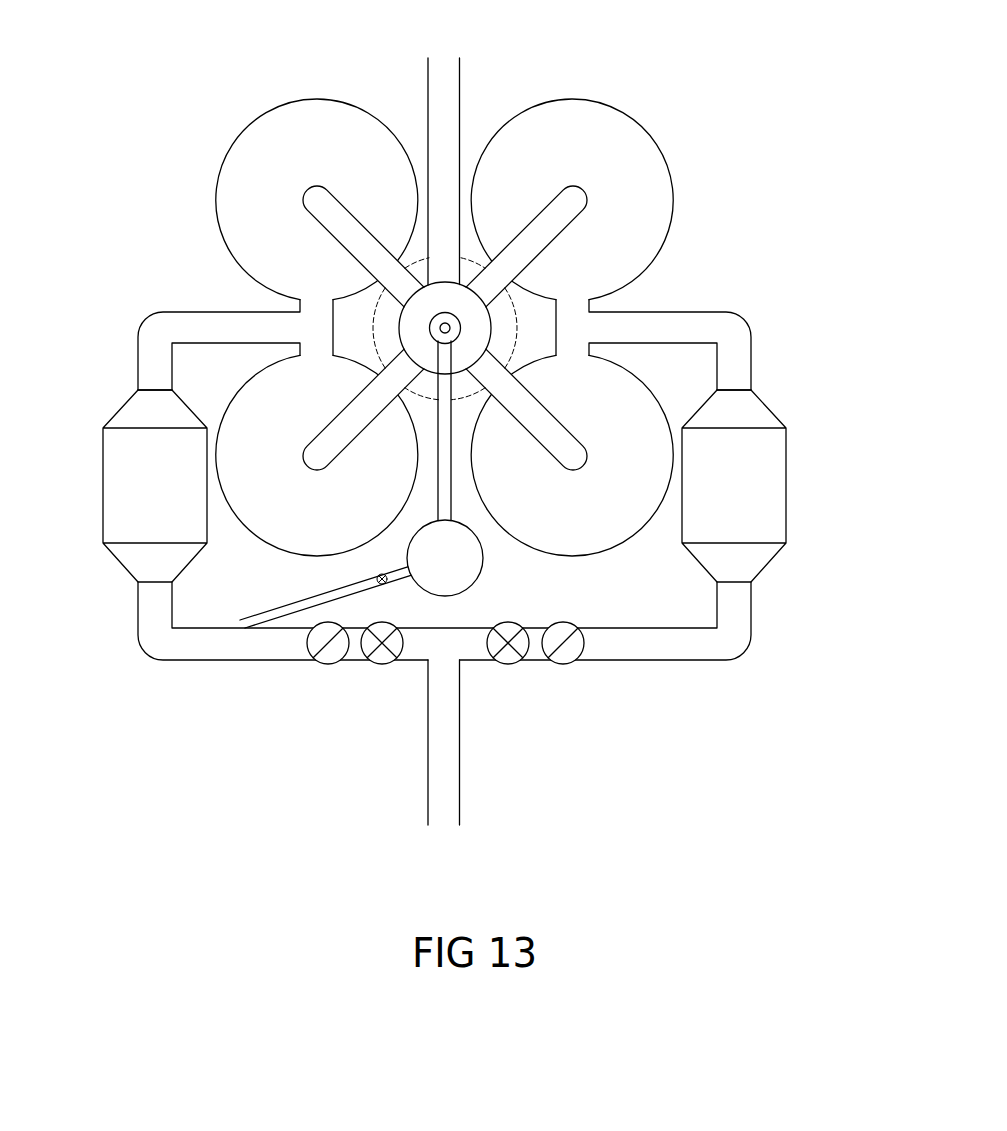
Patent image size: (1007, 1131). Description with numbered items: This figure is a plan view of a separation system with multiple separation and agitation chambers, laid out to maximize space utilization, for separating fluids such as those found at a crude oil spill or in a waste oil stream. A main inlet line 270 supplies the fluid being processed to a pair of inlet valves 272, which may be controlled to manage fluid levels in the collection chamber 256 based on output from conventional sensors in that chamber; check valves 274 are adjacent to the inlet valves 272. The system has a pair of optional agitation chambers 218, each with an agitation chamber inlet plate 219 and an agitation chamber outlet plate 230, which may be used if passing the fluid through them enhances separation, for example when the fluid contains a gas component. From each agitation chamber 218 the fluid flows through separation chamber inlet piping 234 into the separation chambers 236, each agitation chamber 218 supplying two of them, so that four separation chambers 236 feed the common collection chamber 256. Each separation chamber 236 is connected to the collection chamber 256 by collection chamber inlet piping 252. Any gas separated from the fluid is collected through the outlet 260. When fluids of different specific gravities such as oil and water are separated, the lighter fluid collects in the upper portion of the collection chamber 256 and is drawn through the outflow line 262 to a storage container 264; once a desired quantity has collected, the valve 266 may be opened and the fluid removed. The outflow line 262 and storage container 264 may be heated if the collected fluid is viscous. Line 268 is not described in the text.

The agitation chamber 218 is at (147, 493).
The agitation chamber inlet plate 219 is at (103, 542).
The agitation chamber outlet plate 230 is at (104, 427).
The separation chamber inlet piping 234 is at (178, 302).
The separation chamber 236 is at (307, 180).
The collection chamber inlet piping 252 is at (358, 262).
The collection chamber 256 is at (421, 308).
The outlet 260 is at (450, 327).
The outflow line 262 is at (457, 470).
The storage container 264 is at (418, 566).
The valve 266 is at (377, 579).
The inlet conduit 268 is at (443, 58).
The main inlet line 270 is at (467, 763).
The inlet valves 272 is at (382, 646).
The check valves 274 is at (327, 645).